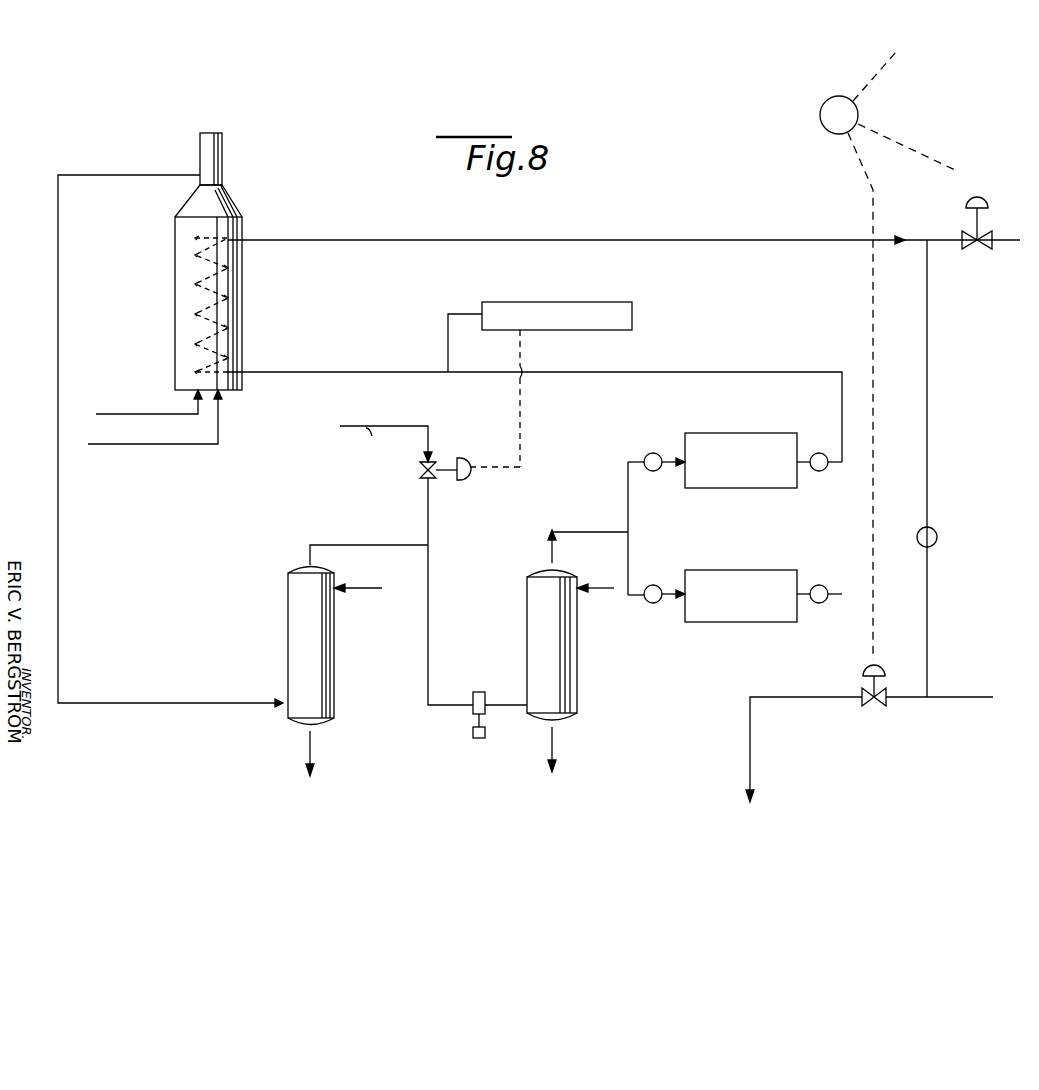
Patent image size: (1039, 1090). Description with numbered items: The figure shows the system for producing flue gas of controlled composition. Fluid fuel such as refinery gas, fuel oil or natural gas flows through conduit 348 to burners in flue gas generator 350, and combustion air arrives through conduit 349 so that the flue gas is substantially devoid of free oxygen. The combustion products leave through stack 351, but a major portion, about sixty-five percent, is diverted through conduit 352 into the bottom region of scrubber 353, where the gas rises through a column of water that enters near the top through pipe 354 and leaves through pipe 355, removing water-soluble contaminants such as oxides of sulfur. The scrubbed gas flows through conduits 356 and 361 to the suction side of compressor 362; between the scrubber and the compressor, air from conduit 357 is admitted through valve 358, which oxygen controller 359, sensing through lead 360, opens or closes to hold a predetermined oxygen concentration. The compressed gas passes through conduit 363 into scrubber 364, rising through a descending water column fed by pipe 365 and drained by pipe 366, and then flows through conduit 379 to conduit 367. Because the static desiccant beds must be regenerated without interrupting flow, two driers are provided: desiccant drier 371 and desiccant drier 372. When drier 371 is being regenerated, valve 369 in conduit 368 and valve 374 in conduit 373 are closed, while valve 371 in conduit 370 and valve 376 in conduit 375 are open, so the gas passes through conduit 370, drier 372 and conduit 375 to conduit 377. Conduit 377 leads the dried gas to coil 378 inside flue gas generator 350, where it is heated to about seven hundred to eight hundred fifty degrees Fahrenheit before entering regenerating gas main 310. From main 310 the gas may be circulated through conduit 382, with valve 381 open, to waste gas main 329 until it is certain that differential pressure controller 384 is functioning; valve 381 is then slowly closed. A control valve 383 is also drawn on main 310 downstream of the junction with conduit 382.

The regenerating gas main 310 is at (786, 240).
The waste gas main 329 is at (784, 700).
The fuel conduit 348 is at (128, 405).
The air conduit 349 is at (172, 450).
The flue gas generator 350 is at (175, 278).
The stack 351 is at (222, 152).
The flue gas conduit 352 is at (58, 338).
The scrubber 353 is at (288, 634).
The water pipe 354 is at (345, 592).
The water outlet pipe 355 is at (310, 752).
The scrubbed flue gas conduit 356 is at (398, 545).
The oxygen-containing gas conduit 357 is at (428, 440).
The valve 358 is at (460, 484).
The oxygen controller 359 is at (618, 302).
The lead 360 is at (466, 314).
The flue gas conduit 361 is at (428, 566).
The compressor 362 is at (479, 692).
The compressed gas conduit 363 is at (504, 705).
The scrubber 364 is at (577, 680).
The water pipe 365 is at (590, 592).
The water outlet pipe 366 is at (552, 748).
The conduit 367 is at (606, 532).
The conduit 368 is at (628, 488).
The valve 369 is at (658, 454).
The conduit 370 is at (668, 590).
The desiccant drier 371 is at (770, 433).
The desiccant drier 372 is at (740, 622).
The conduit 373 is at (836, 464).
The valve 374 is at (822, 453).
The conduit 375 is at (834, 596).
The valve 376 is at (819, 585).
The conduit 377 is at (714, 372).
The coil 378 is at (242, 300).
The conduit 379 is at (552, 550).
The valve 381 is at (934, 528).
The conduit 382 is at (930, 358).
The control valve 383 is at (978, 250).
The differential pressure controller 384 is at (836, 96).